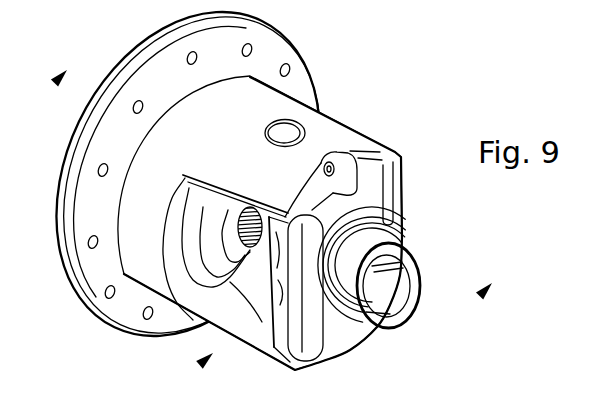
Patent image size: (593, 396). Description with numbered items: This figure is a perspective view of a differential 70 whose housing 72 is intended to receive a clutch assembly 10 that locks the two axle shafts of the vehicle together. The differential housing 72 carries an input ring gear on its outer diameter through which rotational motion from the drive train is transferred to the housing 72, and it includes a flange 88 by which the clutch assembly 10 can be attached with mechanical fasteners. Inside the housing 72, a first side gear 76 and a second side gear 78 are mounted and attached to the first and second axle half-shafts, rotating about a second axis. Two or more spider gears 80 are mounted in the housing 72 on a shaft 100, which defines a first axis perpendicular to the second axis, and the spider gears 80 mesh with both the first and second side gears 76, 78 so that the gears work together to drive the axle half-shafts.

The clutch assembly 10 is at (78, 128).
The differential 70 is at (200, 365).
The differential housing 72 is at (243, 90).
The first side gear 76 is at (215, 240).
The second side gear 78 is at (273, 325).
The spider gears 80 is at (253, 290).
The flange 88 is at (86, 318).
The shaft 100 is at (287, 133).